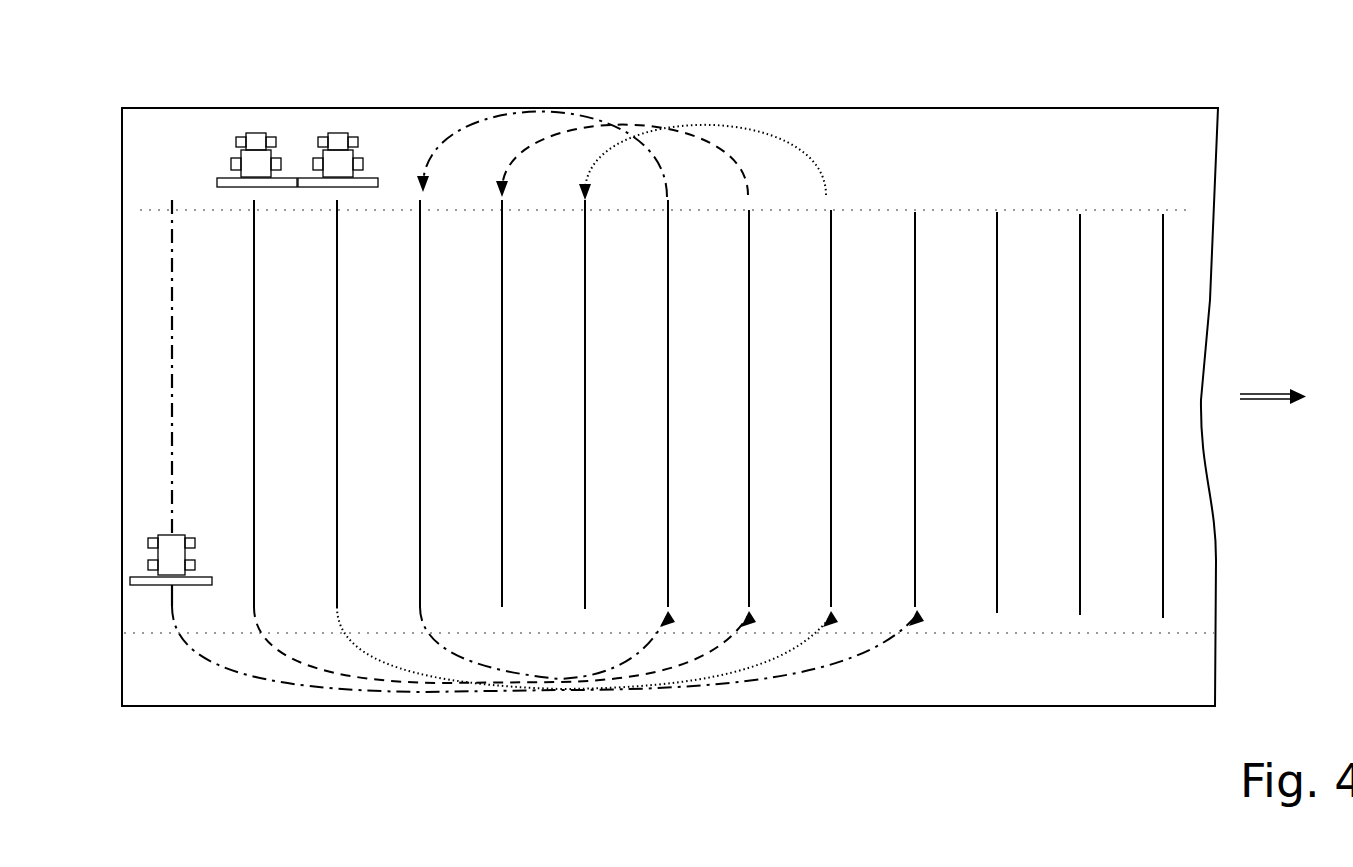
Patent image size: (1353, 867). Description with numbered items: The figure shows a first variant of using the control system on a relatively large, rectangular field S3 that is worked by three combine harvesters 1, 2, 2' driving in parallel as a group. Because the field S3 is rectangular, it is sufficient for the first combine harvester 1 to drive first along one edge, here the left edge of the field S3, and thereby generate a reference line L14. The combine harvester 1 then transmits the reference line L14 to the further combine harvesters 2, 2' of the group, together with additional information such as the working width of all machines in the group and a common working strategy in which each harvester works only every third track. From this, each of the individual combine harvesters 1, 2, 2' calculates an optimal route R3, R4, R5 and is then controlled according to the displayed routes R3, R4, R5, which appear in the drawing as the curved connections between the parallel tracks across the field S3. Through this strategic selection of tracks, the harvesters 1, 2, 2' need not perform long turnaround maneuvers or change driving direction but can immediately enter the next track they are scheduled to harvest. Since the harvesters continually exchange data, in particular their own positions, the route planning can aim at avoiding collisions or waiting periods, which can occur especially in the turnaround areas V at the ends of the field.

The first combine harvester 1 is at (166, 560).
The combine harvester 2 is at (257, 119).
The combine harvester 2' is at (338, 116).
The reference line L14 is at (172, 245).
The route R3 is at (540, 113).
The route R4 is at (637, 128).
The route R5 is at (740, 130).
The field S3 is at (1066, 108).
The turnaround areas V is at (1200, 168).